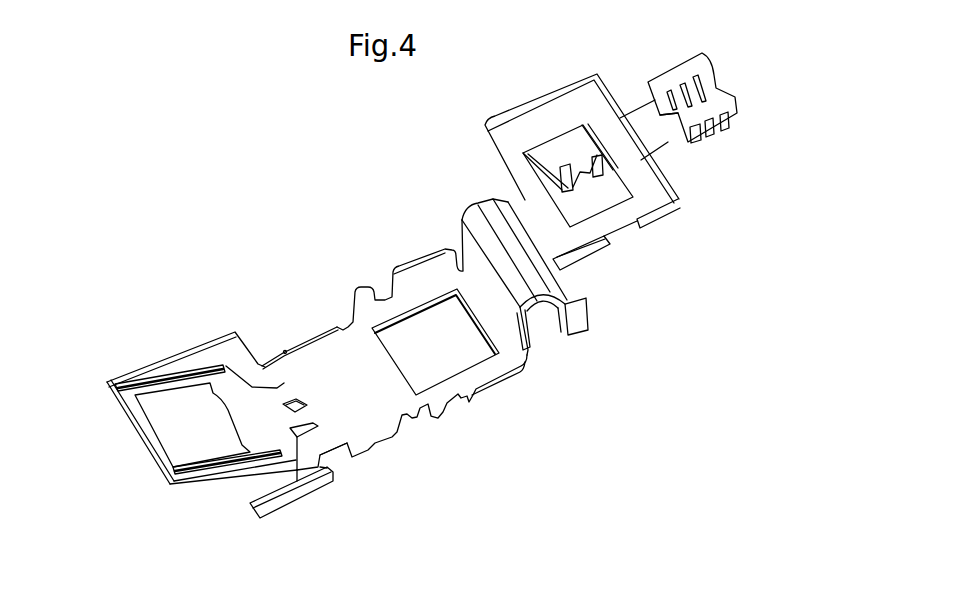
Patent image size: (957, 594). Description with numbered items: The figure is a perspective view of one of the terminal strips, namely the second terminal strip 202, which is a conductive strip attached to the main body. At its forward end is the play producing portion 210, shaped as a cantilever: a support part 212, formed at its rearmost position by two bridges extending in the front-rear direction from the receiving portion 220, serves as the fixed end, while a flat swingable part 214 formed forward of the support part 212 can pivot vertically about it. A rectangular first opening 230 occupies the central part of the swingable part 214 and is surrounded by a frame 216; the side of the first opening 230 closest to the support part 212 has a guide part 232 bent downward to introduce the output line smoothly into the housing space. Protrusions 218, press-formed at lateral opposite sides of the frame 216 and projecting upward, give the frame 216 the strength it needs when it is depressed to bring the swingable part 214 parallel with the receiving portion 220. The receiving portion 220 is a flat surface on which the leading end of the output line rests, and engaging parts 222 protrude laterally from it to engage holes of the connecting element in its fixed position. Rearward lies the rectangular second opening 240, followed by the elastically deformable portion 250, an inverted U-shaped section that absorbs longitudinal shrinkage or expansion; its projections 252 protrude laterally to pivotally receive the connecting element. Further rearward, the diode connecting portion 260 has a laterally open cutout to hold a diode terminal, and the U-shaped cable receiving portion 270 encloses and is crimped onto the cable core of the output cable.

The second terminal strip 202 is at (300, 190).
The play producing portion 210 is at (263, 262).
The swingable part 214 is at (151, 368).
The support part 212 is at (298, 390).
The frame 216 is at (160, 446).
The protrusions 218 is at (142, 387).
The first opening 230 is at (178, 424).
The guide part 232 is at (245, 445).
The receiving portion 220 is at (336, 367).
The engaging parts 222 is at (385, 447).
The second opening 240 is at (448, 352).
The elastically deformable portion 250 is at (533, 333).
The projections 252 is at (458, 232).
The diode connecting portion 260 is at (564, 168).
The cable receiving portion 270 is at (707, 140).